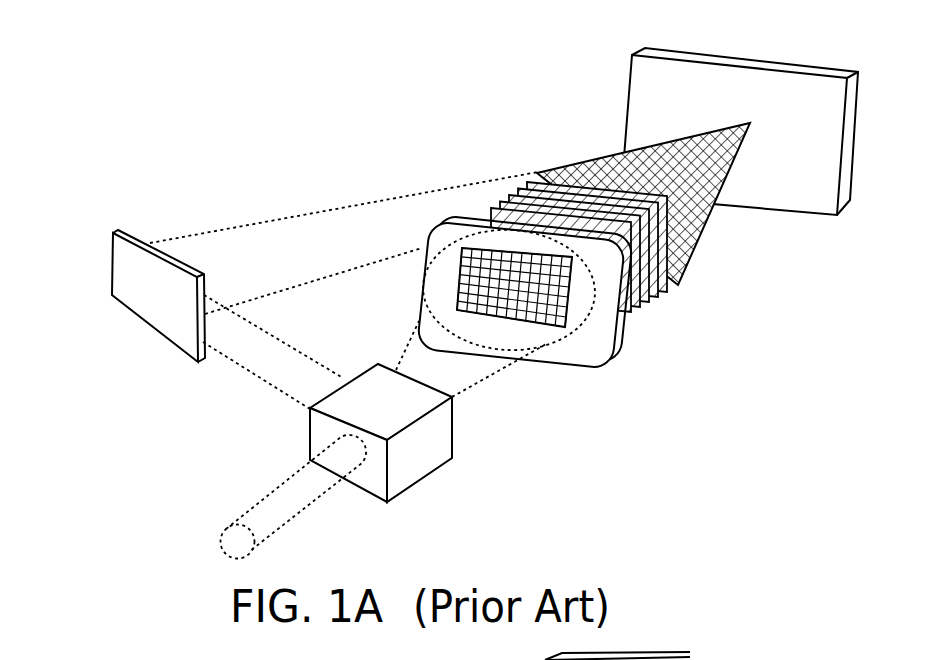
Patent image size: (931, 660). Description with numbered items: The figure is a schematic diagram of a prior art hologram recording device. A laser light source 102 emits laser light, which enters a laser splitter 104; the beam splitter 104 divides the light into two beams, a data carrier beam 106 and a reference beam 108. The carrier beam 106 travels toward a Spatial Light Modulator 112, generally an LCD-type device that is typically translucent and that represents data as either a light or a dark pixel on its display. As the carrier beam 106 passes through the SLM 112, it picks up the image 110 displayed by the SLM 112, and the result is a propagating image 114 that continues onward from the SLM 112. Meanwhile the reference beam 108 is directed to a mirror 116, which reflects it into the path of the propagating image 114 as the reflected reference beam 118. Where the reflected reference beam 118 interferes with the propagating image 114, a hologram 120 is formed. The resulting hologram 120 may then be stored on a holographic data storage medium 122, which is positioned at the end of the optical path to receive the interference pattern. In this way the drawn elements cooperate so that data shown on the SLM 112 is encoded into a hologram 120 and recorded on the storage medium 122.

The laser light source 102 is at (300, 507).
The laser splitter 104 is at (433, 462).
The data carrier beam 106 is at (468, 388).
The reference beam 108 is at (243, 372).
The image 110 is at (528, 306).
The Spatial Light Modulator 112 is at (608, 370).
The propagating image 114 is at (657, 300).
The mirror 116 is at (115, 233).
The reflected reference beam 118 is at (467, 182).
The hologram 120 is at (712, 225).
The holographic data storage medium 122 is at (777, 57).